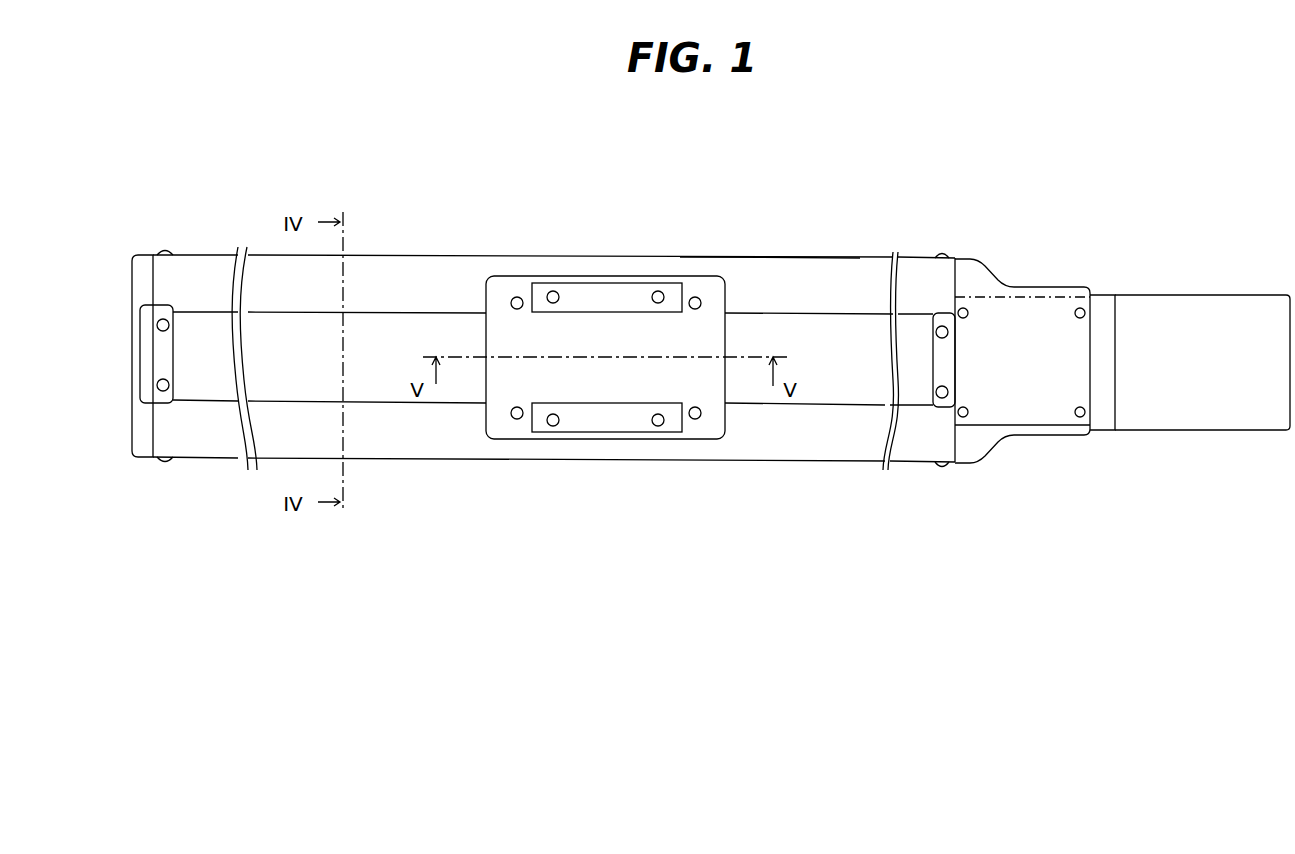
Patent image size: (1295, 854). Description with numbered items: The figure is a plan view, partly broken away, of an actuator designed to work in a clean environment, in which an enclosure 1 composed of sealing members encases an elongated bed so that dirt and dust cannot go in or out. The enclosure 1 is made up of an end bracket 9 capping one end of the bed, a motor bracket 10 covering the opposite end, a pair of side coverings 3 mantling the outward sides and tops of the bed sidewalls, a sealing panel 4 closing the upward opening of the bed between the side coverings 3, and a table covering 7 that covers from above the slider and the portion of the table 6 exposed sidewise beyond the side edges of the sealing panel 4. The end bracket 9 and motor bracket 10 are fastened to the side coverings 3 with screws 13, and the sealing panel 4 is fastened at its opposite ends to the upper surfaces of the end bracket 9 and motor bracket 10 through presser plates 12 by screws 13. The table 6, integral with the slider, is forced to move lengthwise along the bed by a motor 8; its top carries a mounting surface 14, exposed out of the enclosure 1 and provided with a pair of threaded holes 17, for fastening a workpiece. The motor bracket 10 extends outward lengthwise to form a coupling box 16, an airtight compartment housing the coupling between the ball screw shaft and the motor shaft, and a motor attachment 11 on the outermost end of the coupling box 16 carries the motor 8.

The enclosure 1 is at (778, 250).
The side covering 3 is at (863, 275).
The sealing panel 4 is at (390, 330).
The table 6 is at (628, 292).
The table covering 7 is at (712, 285).
The motor 8 is at (1208, 312).
The end bracket 9 is at (143, 445).
The motor bracket 10 is at (985, 282).
The motor attachment 11 is at (1105, 310).
The presser plate 12 is at (168, 313).
The screw 13 is at (170, 250).
The mounting surface 14 is at (570, 292).
The coupling box 16 is at (1032, 392).
The threaded hole 17 is at (660, 428).